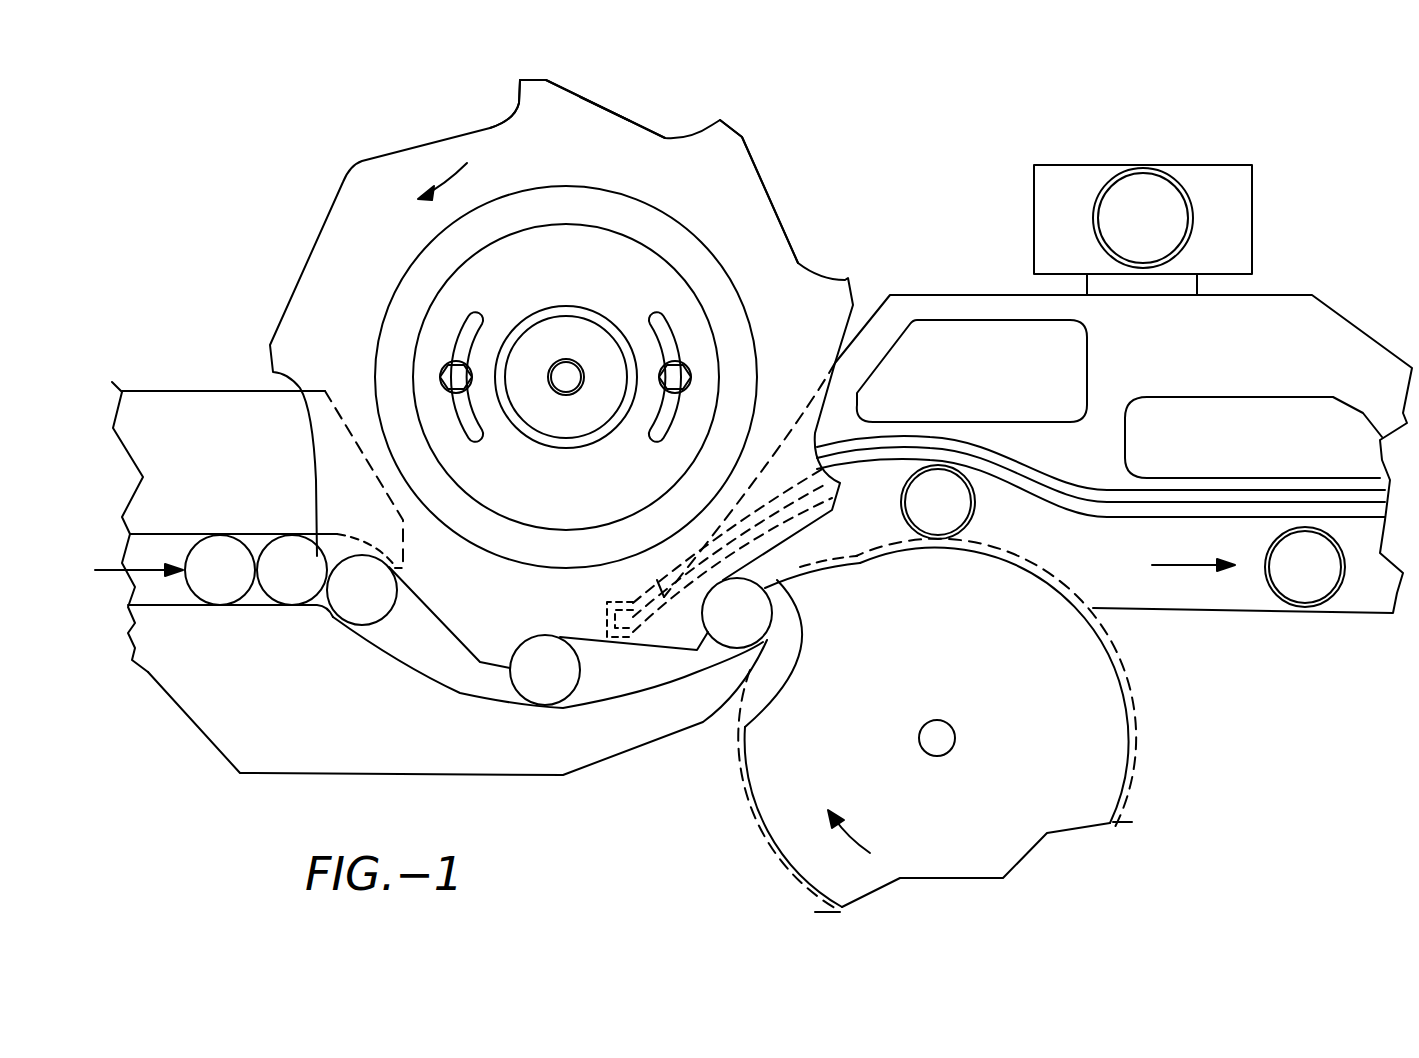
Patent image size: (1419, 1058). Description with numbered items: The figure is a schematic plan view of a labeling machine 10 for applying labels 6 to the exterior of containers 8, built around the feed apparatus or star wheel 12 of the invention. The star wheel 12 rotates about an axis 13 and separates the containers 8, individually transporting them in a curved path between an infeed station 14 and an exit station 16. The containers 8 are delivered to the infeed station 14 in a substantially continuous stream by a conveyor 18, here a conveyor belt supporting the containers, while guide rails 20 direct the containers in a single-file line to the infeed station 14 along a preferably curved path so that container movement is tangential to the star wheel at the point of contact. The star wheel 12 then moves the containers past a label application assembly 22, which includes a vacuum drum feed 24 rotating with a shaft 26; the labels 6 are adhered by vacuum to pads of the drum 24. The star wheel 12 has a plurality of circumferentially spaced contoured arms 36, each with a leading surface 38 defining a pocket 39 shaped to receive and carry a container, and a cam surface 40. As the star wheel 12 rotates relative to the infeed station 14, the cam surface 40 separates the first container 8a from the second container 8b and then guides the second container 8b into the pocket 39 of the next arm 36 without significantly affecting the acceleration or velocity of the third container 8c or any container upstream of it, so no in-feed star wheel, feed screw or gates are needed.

The labels 6 is at (737, 757).
The containers 8 is at (1310, 578).
The first container 8a is at (362, 590).
The second container 8b is at (292, 570).
The third container 8c is at (218, 572).
The labeling machine 10 is at (995, 147).
The star wheel 12 is at (552, 150).
The axis 13 is at (566, 377).
The infeed station 14 is at (333, 620).
The exit station 16 is at (740, 730).
The conveyor 18 is at (148, 589).
The guide rails 20 is at (162, 442).
The label application assembly 22 is at (1135, 665).
The vacuum drum feed 24 is at (1125, 802).
The shaft 26 is at (940, 738).
The contoured arms 36 is at (538, 93).
The leading surface 38 is at (518, 87).
The pocket 39 is at (512, 112).
The cam surface 40 is at (607, 108).